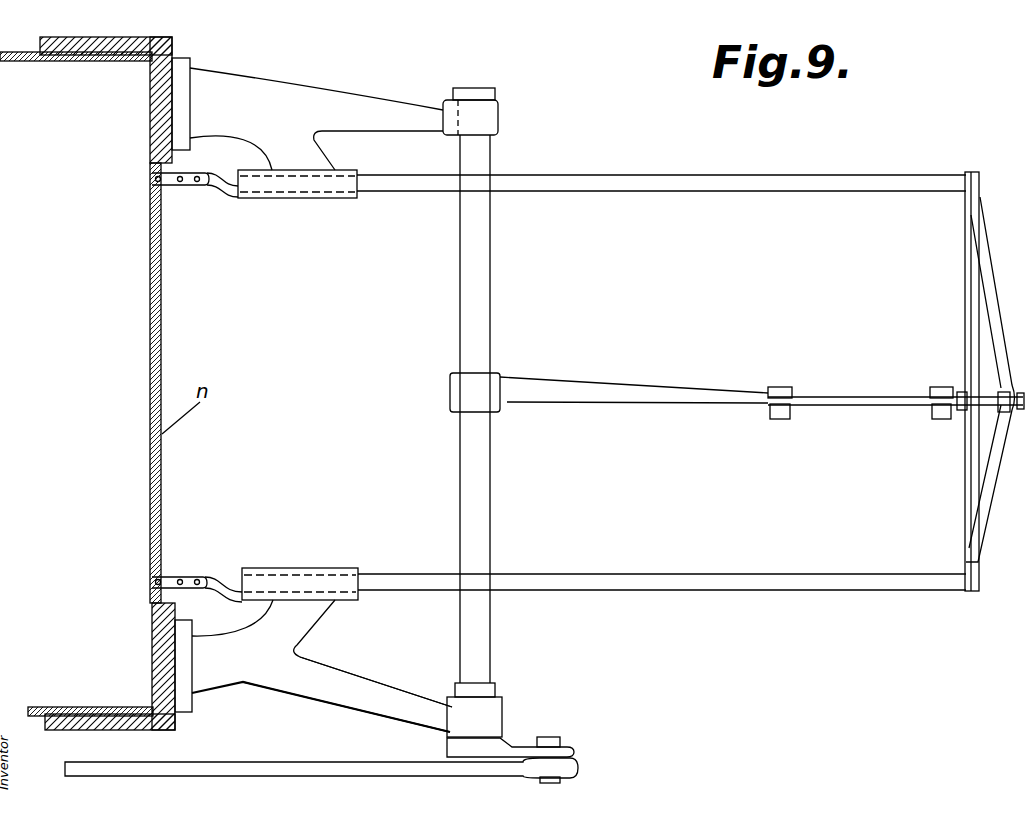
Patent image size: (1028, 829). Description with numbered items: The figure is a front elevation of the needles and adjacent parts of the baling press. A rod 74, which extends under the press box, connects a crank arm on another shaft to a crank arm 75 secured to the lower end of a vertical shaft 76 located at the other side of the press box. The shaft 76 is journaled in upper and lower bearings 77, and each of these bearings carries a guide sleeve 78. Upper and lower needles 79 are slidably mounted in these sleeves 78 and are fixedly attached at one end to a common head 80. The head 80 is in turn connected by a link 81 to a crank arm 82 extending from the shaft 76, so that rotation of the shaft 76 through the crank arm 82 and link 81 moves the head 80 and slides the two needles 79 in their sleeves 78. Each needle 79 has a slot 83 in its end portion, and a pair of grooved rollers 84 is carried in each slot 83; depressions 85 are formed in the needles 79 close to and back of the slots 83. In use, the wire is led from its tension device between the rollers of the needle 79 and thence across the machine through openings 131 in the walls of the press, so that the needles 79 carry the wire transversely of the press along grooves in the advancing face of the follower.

The rod 74 is at (298, 762).
The crank arm 75 is at (517, 745).
The vertical shaft 76 is at (488, 637).
The bearings 77 is at (378, 690).
The guide sleeve 78 is at (306, 573).
The needles 79 is at (853, 176).
The head 80 is at (992, 286).
The link 81 is at (861, 403).
The crank arm 82 is at (625, 392).
The slot 83 is at (188, 186).
The grooved rollers 84 is at (152, 172).
The depressions 85 is at (230, 182).
The openings 131 is at (153, 180).